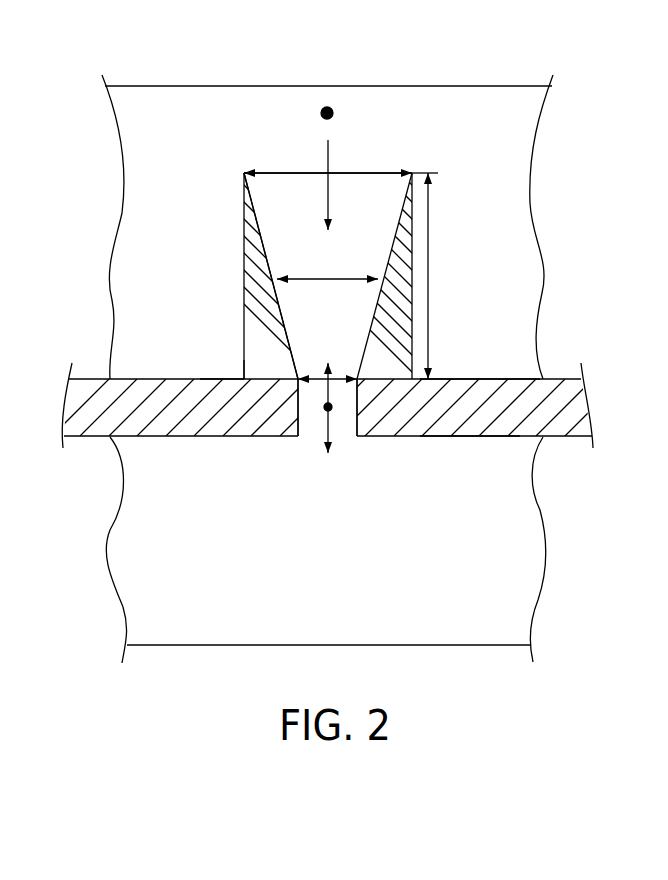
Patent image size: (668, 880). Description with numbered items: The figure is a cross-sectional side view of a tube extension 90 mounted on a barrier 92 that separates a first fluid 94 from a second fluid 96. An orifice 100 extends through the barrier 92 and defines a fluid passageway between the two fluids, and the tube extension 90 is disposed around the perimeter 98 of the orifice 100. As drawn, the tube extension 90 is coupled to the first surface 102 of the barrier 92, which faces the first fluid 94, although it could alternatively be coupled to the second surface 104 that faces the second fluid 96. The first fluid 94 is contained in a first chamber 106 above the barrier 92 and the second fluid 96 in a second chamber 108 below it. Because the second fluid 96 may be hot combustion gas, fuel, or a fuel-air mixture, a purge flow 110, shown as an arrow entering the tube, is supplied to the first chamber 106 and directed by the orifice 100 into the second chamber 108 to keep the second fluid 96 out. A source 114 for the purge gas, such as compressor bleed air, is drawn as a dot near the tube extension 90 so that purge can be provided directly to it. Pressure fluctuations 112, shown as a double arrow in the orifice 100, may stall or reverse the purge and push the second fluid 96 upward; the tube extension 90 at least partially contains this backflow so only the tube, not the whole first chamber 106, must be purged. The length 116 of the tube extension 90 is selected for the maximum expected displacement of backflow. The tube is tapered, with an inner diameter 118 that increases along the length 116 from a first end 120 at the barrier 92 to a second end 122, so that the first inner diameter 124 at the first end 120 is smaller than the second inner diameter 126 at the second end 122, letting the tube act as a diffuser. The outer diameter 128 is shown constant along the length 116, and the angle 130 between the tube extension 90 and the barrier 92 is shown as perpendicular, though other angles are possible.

The tube extension 90 is at (224, 203).
The barrier 92 is at (577, 418).
The first fluid 94 is at (493, 180).
The second fluid 96 is at (486, 578).
The perimeter 98 is at (247, 309).
The orifice 100 is at (344, 440).
The first surface 102 is at (480, 379).
The second surface 104 is at (468, 438).
The first chamber 106 is at (548, 263).
The second chamber 108 is at (539, 505).
The purge flow 110 is at (328, 178).
The pressure fluctuations 112 is at (323, 433).
The source 114 is at (335, 110).
The length 116 is at (428, 250).
The inner diameter 118 is at (330, 278).
The first end 120 is at (414, 360).
The second end 122 is at (416, 163).
The first inner diameter 124 is at (334, 370).
The second inner diameter 126 is at (290, 171).
The outer diameter 128 is at (297, 306).
The angle 130 is at (240, 346).